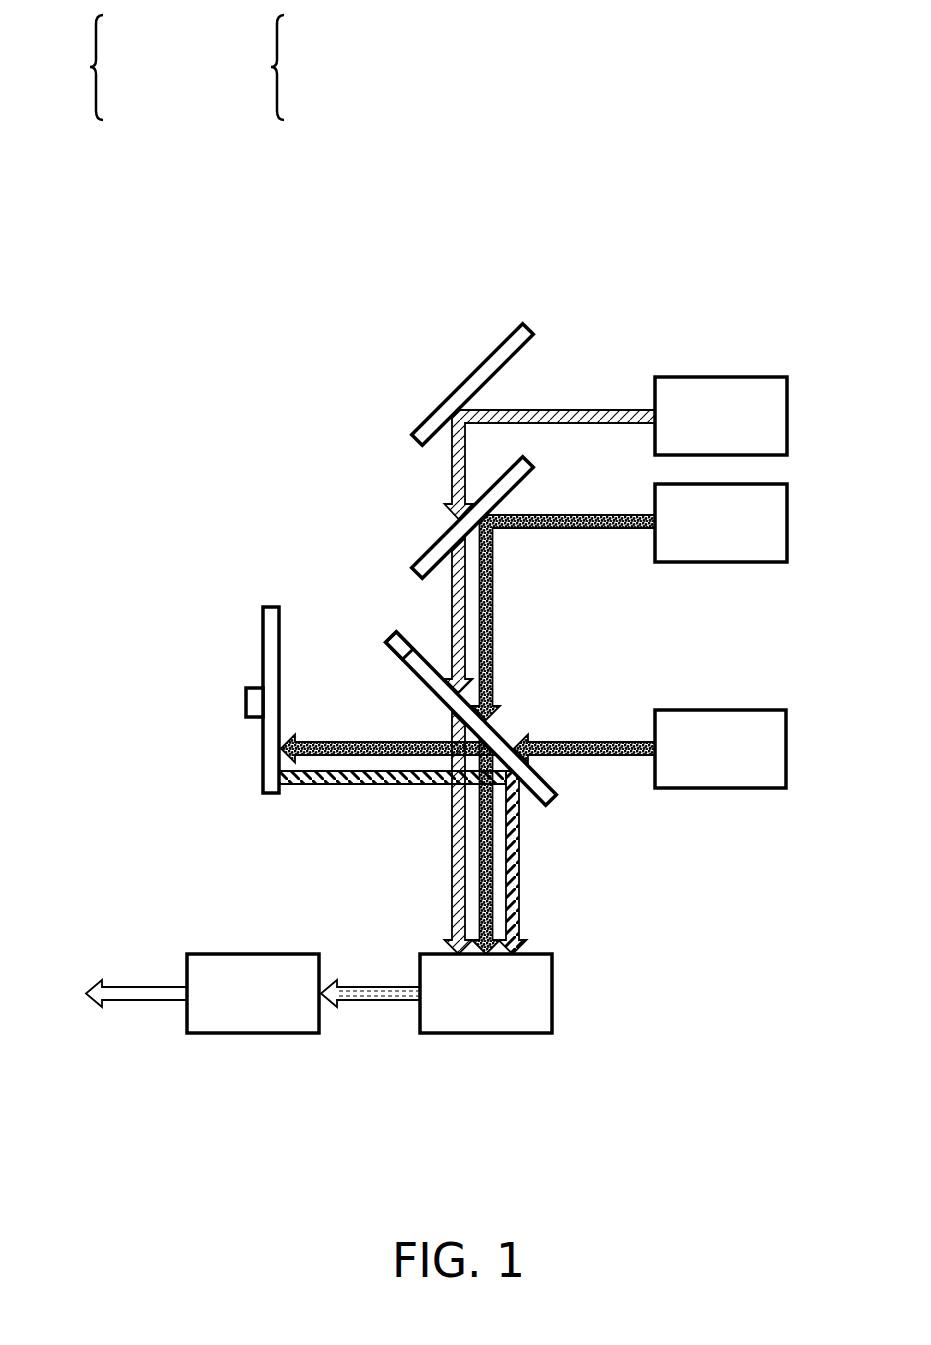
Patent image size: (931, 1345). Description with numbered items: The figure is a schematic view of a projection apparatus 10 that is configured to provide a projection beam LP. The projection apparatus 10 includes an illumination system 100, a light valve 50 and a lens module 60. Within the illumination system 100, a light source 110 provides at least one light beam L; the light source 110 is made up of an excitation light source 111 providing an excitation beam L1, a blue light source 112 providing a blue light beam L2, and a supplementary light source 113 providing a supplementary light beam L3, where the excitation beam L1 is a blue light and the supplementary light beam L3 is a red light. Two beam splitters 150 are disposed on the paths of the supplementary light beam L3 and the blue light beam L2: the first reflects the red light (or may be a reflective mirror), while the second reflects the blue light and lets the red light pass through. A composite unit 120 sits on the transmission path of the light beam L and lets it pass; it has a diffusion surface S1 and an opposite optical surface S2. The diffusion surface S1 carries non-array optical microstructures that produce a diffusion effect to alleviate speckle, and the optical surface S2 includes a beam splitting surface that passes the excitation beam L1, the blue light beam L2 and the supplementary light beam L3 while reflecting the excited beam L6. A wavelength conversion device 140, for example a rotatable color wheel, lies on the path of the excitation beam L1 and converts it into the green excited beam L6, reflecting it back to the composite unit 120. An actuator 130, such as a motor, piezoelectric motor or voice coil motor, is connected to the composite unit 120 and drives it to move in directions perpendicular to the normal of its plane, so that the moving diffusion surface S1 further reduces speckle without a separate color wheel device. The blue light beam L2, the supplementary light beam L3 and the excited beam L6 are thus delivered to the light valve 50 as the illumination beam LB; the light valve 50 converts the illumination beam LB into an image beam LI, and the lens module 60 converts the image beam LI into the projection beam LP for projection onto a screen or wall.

The projection apparatus 10 is at (812, 1114).
The light valve 50 is at (483, 1013).
The lens module 60 is at (252, 1013).
The illumination system 100 is at (343, 298).
The light source 110 is at (96, 68).
The excitation light source 111 is at (768, 747).
The blue light source 112 is at (768, 523).
The supplementary light source 113 is at (768, 417).
The composite unit 120 is at (552, 796).
The actuator 130 is at (390, 632).
The wavelength conversion device 140 is at (270, 636).
The beam splitters 150 is at (417, 430).
The light beam L is at (286, 68).
The excitation beam L1 is at (586, 742).
The blue light beam L2 is at (585, 515).
The supplementary light beam L3 is at (585, 410).
The excited beam L6 is at (373, 786).
The illumination beam LB is at (413, 904).
The image beam LI is at (370, 1003).
The projection beam LP is at (145, 1003).
The diffusion surface S1 is at (506, 734).
The optical surface S2 is at (426, 685).